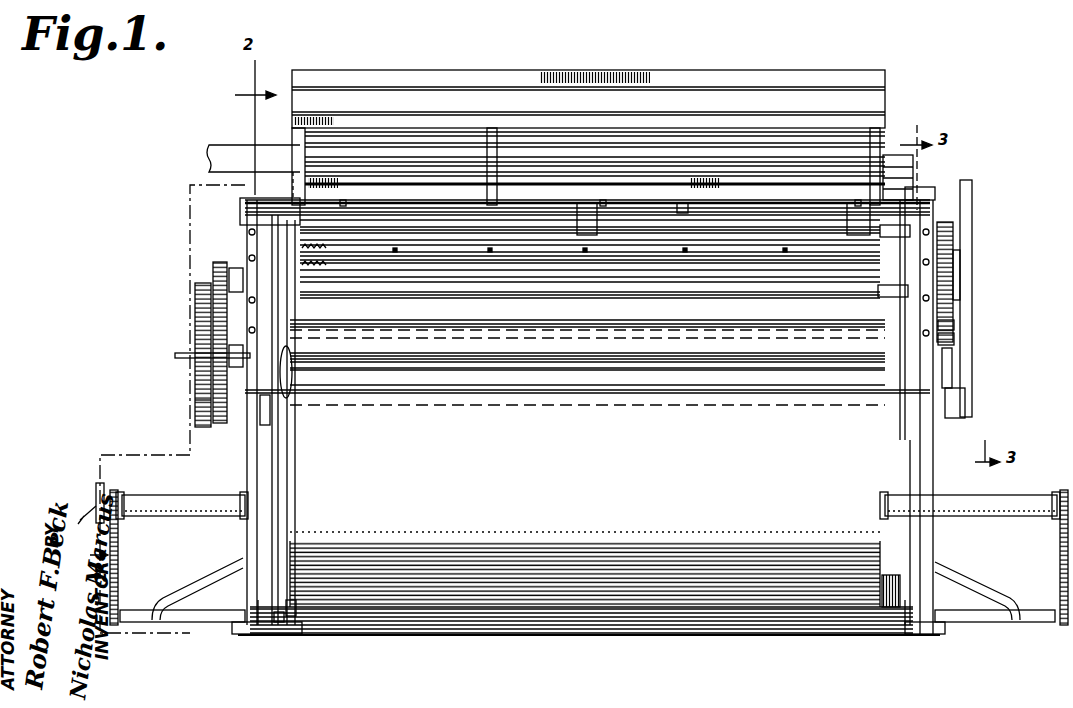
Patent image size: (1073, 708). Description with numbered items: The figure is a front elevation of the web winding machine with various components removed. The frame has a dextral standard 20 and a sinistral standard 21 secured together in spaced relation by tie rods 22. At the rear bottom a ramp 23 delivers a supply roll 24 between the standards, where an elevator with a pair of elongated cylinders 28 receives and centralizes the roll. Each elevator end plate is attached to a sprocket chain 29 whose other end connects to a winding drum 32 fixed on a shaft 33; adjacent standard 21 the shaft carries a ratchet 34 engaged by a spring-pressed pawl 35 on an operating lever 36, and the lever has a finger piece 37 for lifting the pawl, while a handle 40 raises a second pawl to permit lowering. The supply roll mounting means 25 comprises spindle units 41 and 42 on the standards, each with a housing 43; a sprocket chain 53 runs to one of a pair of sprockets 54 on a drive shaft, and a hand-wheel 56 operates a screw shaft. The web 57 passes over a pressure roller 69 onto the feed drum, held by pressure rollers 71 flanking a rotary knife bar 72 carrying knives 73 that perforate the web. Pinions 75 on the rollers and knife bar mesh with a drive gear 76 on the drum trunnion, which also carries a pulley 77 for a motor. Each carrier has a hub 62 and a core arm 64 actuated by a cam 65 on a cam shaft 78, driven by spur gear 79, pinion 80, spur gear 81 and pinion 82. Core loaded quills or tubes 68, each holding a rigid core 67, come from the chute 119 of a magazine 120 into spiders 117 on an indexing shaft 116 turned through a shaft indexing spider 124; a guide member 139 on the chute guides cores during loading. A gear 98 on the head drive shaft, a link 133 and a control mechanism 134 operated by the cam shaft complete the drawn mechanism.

The magazine 120 is at (540, 87).
The chute 119 is at (310, 130).
The quill or tube 68 is at (445, 158).
The guide member 139 is at (225, 150).
The cylindrical rigid core 67 is at (893, 160).
The gear 98 is at (912, 192).
The spiders 117 is at (330, 210).
The tie rods 22 is at (736, 212).
The indexing shaft 116 is at (784, 222).
The pulley 77 is at (974, 200).
The shaft indexing spider 124 is at (245, 222).
The core arm 64 is at (895, 232).
The pinions 75 is at (955, 278).
The pinion 82 is at (235, 268).
The pressure rollers 71 is at (415, 282).
The rotary knife bar 72 is at (440, 292).
The knives 73 is at (512, 282).
The spur gear 81 is at (215, 310).
The pinion 80 is at (200, 340).
The hub 62 is at (880, 292).
The cam 65 is at (946, 325).
The cam shaft 78 is at (178, 356).
The drive gear 76 is at (955, 338).
The link 133 is at (955, 362).
The spur gear 79 is at (200, 412).
The finger piece 37 is at (292, 380).
The control mechanism 134 is at (966, 390).
The handle 40 is at (262, 412).
The web 57 is at (440, 382).
The pressure roller 69 is at (655, 365).
The operating lever 36 is at (278, 446).
The dextral standard 20 is at (922, 456).
The hand-wheel 56 is at (94, 488).
The supply roll mounting means 25 is at (149, 489).
The spindle unit 42 is at (196, 496).
The sinistral standard 21 is at (258, 460).
The spindle unit 41 is at (1036, 496).
The supply roll 24 is at (585, 539).
The housing 43 is at (186, 512).
The sprocket chain 53 is at (118, 548).
The sprocket chain 29 is at (258, 556).
The sprockets 54 is at (122, 612).
The ramp 23 is at (902, 592).
The winding drum 32 is at (260, 628).
The ratchet 34 is at (280, 624).
The spring-pressed pawl 35 is at (292, 612).
The elongated cylinders 28 is at (756, 626).
The shaft 33 is at (852, 612).